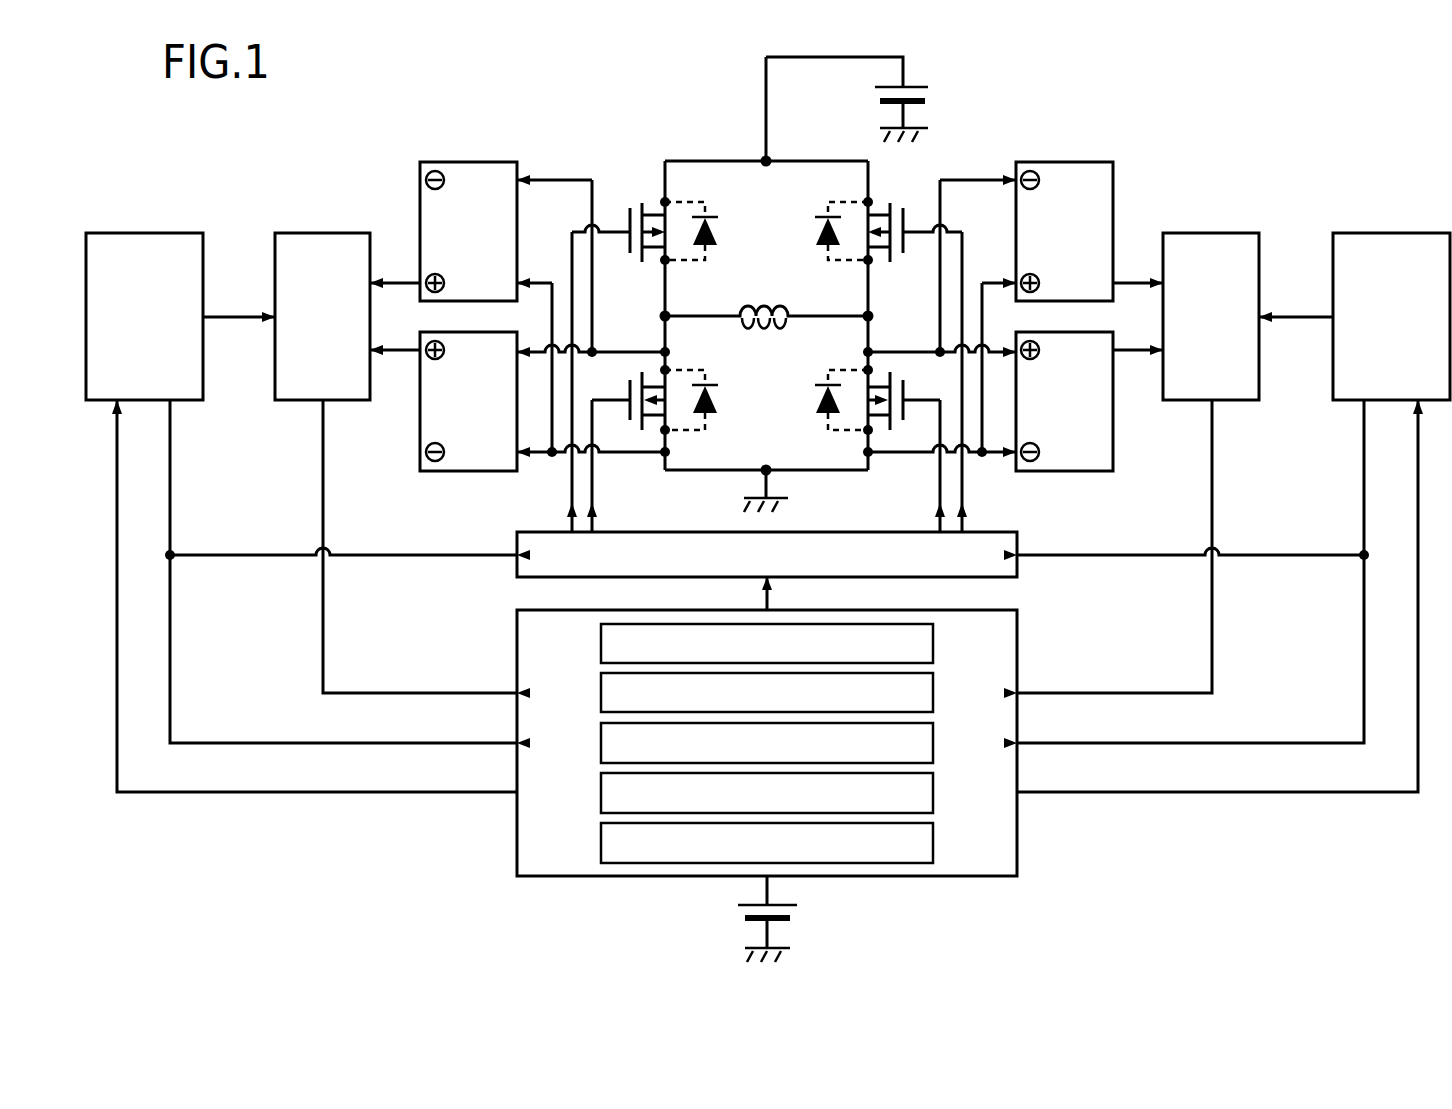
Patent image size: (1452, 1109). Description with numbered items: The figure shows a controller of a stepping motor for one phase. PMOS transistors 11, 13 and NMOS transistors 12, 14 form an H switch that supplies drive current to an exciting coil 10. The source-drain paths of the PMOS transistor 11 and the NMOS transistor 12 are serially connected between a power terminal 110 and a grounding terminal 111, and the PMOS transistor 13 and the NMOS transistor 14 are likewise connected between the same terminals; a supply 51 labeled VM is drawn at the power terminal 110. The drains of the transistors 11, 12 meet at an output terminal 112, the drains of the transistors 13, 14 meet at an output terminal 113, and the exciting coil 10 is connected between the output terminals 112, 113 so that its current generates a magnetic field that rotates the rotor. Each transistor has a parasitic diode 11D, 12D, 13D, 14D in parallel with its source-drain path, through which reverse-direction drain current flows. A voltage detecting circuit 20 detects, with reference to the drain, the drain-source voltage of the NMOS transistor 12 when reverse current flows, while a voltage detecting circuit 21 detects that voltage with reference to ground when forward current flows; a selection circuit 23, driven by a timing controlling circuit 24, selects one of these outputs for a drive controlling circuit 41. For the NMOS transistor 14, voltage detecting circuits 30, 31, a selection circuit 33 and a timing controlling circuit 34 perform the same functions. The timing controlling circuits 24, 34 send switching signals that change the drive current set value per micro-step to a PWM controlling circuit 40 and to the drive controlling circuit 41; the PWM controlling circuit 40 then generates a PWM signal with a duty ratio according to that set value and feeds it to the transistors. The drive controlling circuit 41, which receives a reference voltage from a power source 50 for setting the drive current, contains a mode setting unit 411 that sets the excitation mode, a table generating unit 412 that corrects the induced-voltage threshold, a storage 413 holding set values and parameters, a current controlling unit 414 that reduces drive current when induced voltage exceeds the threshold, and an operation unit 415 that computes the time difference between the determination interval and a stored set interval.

The exciting coil 10 is at (765, 302).
The PMOS transistor 11 is at (630, 207).
The NMOS transistor 12 is at (628, 388).
The PMOS transistor 13 is at (903, 207).
The NMOS transistor 14 is at (905, 389).
The parasitic diode 11D is at (716, 232).
The parasitic diode 12D is at (712, 418).
The parasitic diode 13D is at (817, 232).
The parasitic diode 14D is at (821, 418).
The power terminal 110 is at (767, 167).
The grounding terminal 111 is at (764, 465).
The output terminal 112 is at (659, 316).
The output terminal 113 is at (874, 316).
The voltage detecting circuit 20 is at (478, 148).
The voltage detecting circuit 21 is at (478, 471).
The selection circuit 23 is at (332, 219).
The timing controlling circuit 24 is at (165, 219).
The voltage detecting circuit 30 is at (1074, 148).
The voltage detecting circuit 31 is at (1074, 471).
The selection circuit 33 is at (1220, 219).
The timing controlling circuit 34 is at (1409, 219).
The PWM controlling circuit 40 is at (1019, 544).
The drive controlling circuit 41 is at (1020, 647).
The mode setting unit 411 is at (936, 645).
The table generating unit 412 is at (936, 694).
The storage 413 is at (936, 744).
The current controlling unit 414 is at (936, 794).
The operation unit 415 is at (936, 844).
The power source 50 is at (746, 913).
The power supply VM 51 is at (885, 96).